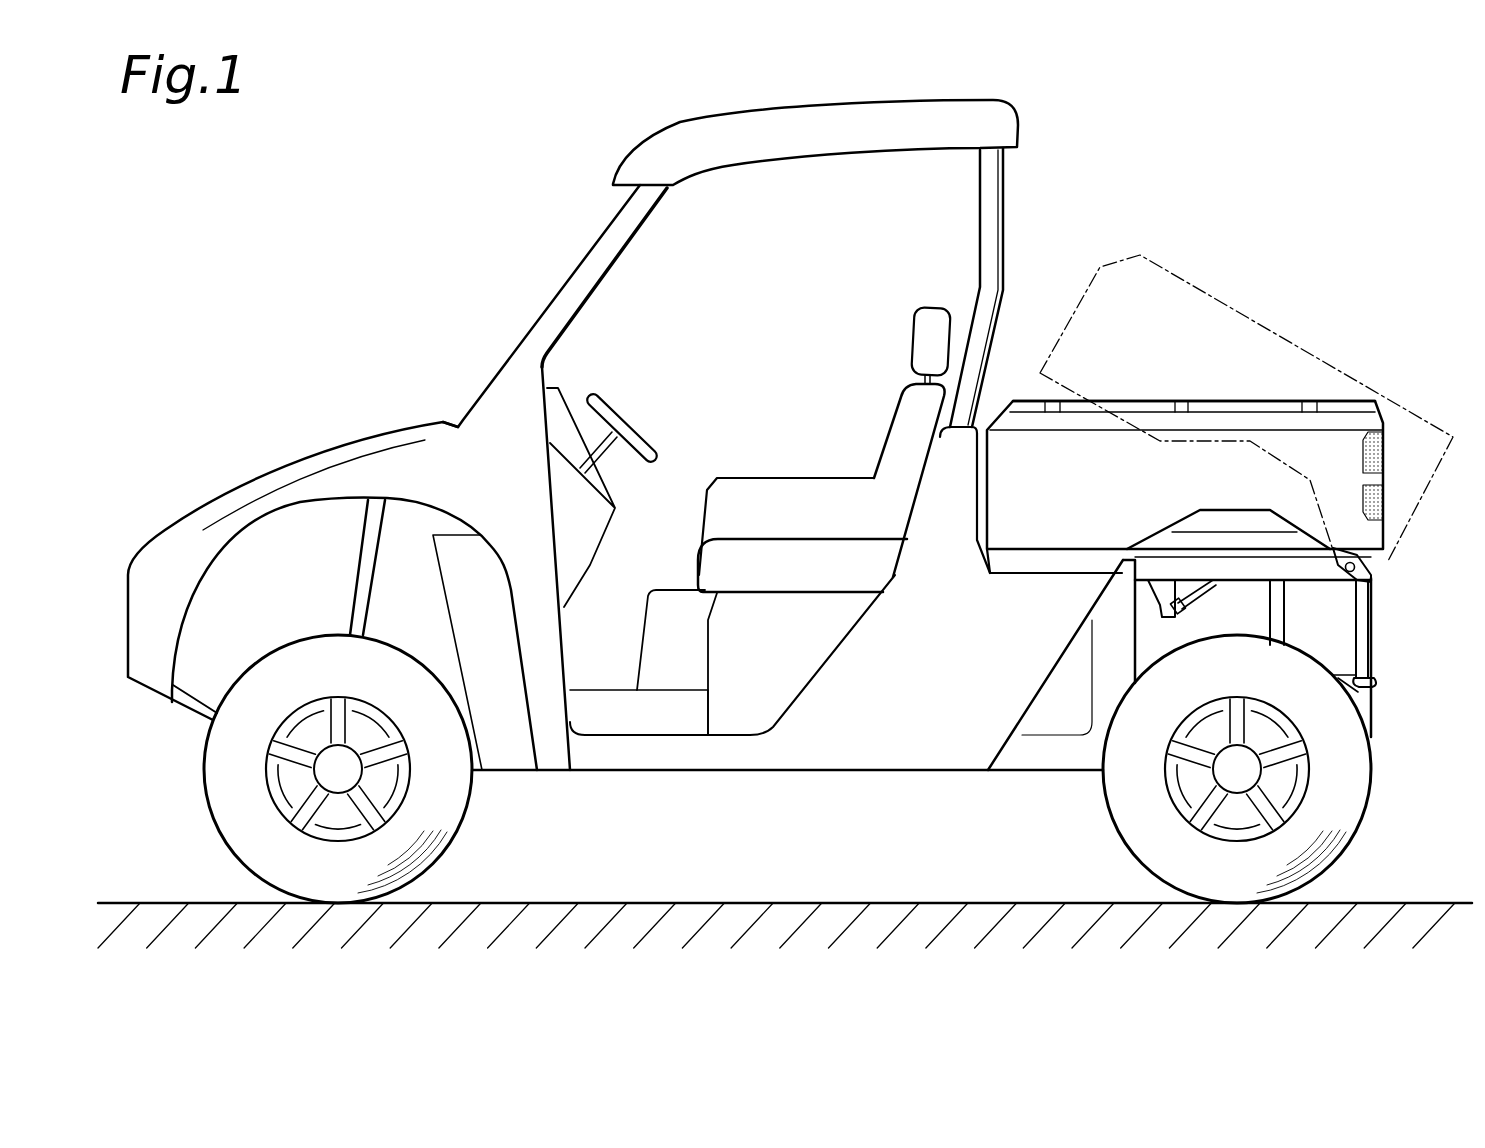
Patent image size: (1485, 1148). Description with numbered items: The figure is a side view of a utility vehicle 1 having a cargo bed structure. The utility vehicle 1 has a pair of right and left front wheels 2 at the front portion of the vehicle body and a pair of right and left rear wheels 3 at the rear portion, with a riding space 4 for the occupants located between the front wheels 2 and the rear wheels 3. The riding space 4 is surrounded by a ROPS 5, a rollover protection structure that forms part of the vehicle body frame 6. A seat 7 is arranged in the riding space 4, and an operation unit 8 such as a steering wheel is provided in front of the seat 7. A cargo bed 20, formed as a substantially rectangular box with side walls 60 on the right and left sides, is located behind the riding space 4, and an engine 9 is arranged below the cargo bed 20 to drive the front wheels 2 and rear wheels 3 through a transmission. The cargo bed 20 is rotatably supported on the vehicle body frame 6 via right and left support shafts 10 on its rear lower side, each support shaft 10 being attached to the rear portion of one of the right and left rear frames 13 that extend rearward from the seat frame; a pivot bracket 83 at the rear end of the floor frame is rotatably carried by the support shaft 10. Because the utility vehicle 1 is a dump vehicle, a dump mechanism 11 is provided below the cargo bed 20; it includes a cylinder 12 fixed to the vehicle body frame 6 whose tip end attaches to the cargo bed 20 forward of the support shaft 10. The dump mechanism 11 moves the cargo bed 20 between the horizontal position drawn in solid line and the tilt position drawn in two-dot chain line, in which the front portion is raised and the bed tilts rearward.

The utility vehicle 1 is at (488, 212).
The front wheels 2 is at (215, 800).
The rear wheels 3 is at (1355, 755).
The riding space 4 is at (834, 309).
The ROPS 5 is at (628, 238).
The vehicle body frame 6 is at (1360, 592).
The seat 7 is at (810, 550).
The operation unit 8 is at (628, 425).
The engine 9 is at (1045, 722).
The support shaft 10 is at (1358, 575).
The dump mechanism 11 is at (1171, 625).
The cylinder 12 is at (1190, 590).
The rear frames 13 is at (1148, 572).
The cargo bed 20 is at (1236, 300).
The side walls 60 is at (1222, 398).
The pivot bracket 83 is at (1345, 566).